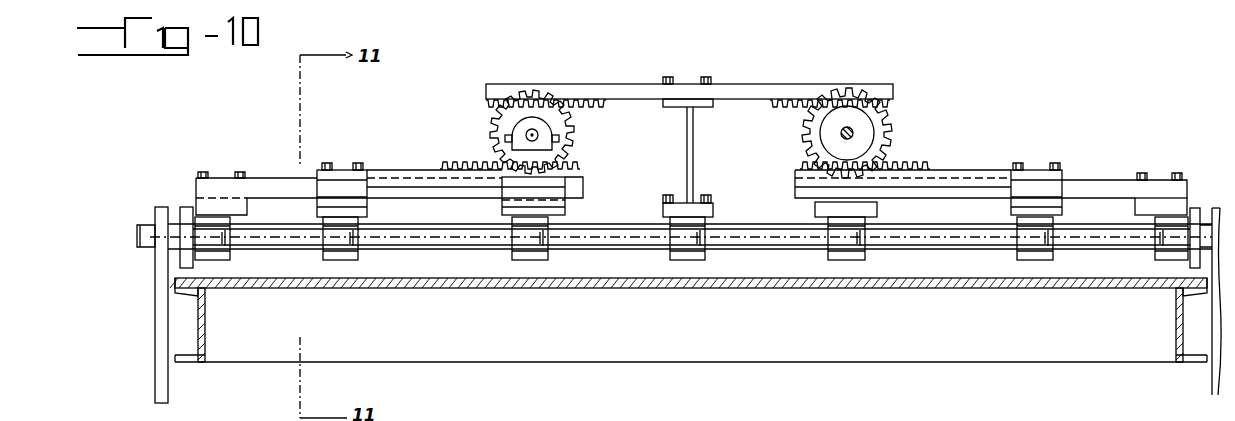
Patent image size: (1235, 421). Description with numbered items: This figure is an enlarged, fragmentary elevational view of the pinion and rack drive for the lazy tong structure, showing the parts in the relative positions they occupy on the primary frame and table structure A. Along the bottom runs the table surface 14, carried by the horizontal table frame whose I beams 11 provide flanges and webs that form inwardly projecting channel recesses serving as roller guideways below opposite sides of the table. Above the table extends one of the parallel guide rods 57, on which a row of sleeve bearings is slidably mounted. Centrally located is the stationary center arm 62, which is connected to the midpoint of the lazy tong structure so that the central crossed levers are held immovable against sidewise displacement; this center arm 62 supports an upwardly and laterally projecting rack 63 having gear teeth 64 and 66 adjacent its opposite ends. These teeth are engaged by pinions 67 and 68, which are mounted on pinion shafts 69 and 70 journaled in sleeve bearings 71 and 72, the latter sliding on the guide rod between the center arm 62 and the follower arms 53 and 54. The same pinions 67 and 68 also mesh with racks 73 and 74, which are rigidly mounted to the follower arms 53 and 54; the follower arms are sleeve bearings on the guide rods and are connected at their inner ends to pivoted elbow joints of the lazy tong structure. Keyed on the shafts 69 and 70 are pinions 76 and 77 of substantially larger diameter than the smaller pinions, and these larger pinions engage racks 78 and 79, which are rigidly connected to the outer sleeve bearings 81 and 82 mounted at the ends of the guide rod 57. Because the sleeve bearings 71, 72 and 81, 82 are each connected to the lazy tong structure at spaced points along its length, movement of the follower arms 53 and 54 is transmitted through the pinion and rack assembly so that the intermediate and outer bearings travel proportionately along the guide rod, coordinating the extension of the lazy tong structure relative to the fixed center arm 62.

The I beam 11 is at (205, 337).
The table surface 14 is at (755, 278).
The follower arm 53 is at (1037, 261).
The follower arm 54 is at (345, 261).
The guide rod 57 is at (598, 250).
The center arm 62 is at (695, 261).
The rack 63 is at (760, 84).
The gear teeth 64 is at (788, 107).
The gear teeth 66 is at (589, 105).
The pinion 67 is at (872, 128).
The pinion 68 is at (550, 100).
The pinion shaft 69 is at (855, 140).
The pinion shaft 70 is at (520, 136).
The sleeve bearing 71 is at (850, 261).
The sleeve bearing 72 is at (535, 261).
The rack 73 is at (905, 165).
The rack 74 is at (442, 165).
The pinion 76 is at (886, 108).
The pinion 77 is at (492, 120).
The rack 78 is at (1088, 190).
The rack 79 is at (272, 185).
The outer sleeve bearing 81 is at (1165, 261).
The outer sleeve bearing 82 is at (222, 261).
The primary frame and table structure A is at (923, 295).